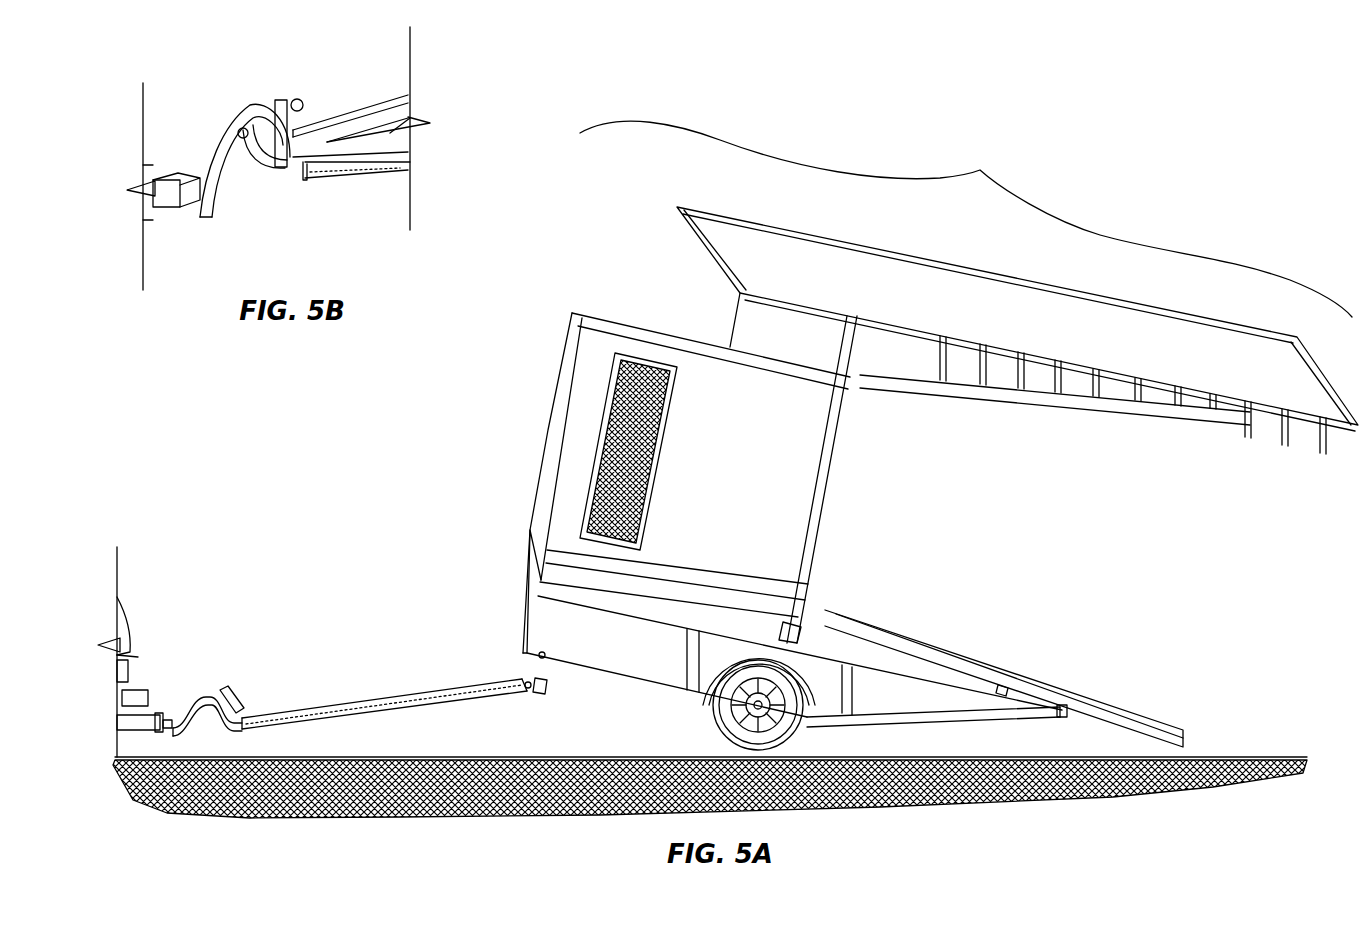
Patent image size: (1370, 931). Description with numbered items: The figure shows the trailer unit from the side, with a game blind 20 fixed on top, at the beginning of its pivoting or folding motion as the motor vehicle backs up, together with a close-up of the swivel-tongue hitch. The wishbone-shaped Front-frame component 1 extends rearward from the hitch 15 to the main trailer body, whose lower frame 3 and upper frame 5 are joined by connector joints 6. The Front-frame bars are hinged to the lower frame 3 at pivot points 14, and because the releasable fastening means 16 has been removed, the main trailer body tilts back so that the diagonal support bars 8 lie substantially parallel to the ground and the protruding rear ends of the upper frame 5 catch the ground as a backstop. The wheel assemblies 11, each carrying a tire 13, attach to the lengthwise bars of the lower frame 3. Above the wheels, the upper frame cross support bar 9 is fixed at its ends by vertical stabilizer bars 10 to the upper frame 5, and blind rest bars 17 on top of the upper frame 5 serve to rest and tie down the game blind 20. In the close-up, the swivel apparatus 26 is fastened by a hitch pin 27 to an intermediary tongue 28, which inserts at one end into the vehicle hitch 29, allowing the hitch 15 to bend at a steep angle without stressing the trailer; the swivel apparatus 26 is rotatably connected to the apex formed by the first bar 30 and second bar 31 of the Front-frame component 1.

In FIG. 5A, the Front-frame component 1 is at (353, 704).
In FIG. 5A, the lower frame 3 is at (553, 653).
In FIG. 5A, the upper frame 5 is at (677, 620).
In FIG. 5A, the connector joints 6 is at (530, 613).
In FIG. 5A, the diagonal support bars 8 is at (948, 707).
In FIG. 5A, the upper frame cross support bar 9 is at (792, 590).
In FIG. 5A, the vertical stabilizer bars 10 is at (782, 628).
In FIG. 5A, the wheel assemblies 11 is at (770, 708).
In FIG. 5A, the tire 13 is at (740, 737).
In FIG. 5A, the pivot points 14 is at (616, 680).
In FIG. 5A, the hitch 15 is at (232, 704).
In FIG. 5A, the releasable fastening means 16 is at (540, 688).
In FIG. 5A, the blind rest bars 17 is at (540, 577).
In FIG. 5A, the game blind 20 is at (980, 170).
In FIG. 5B, the swivel apparatus 26 is at (287, 99).
In FIG. 5B, the hitch pin 27 is at (245, 140).
In FIG. 5B, the intermediary tongue 28 is at (236, 106).
In FIG. 5B, the vehicle hitch 29 is at (165, 207).
In FIG. 5B, the first bar 30 is at (400, 162).
In FIG. 5B, the second bar 31 is at (397, 102).